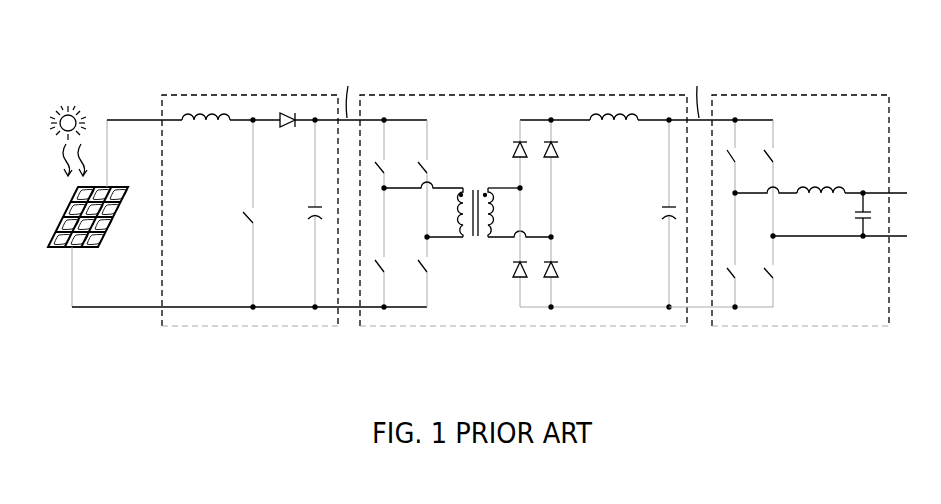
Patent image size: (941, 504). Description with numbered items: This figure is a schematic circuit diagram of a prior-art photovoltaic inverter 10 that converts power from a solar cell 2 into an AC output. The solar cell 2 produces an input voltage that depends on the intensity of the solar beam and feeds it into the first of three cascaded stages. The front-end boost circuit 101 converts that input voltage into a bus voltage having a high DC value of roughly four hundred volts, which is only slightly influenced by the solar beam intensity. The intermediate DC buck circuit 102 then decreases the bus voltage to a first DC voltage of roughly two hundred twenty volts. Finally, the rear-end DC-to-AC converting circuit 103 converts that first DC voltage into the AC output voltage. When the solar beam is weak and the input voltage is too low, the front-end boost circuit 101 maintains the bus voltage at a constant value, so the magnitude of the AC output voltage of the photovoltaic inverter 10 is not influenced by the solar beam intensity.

The photovoltaic inverter 10 is at (932, 44).
The solar cell 2 is at (108, 242).
The front-end boost circuit 101 is at (257, 95).
The intermediate DC buck circuit 102 is at (457, 95).
The rear-end DC-to-AC converting circuit 103 is at (788, 95).